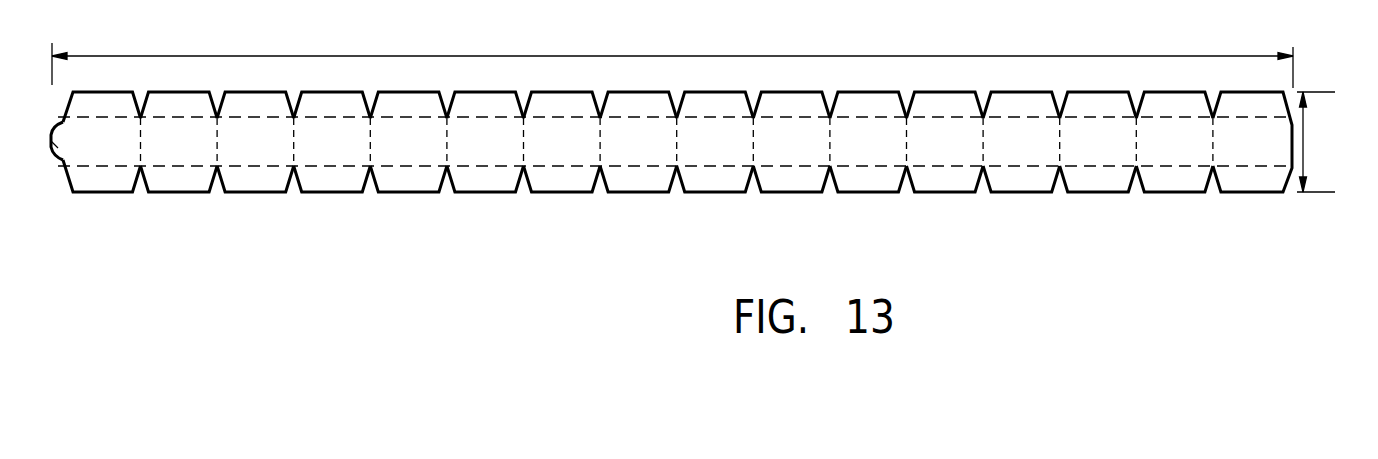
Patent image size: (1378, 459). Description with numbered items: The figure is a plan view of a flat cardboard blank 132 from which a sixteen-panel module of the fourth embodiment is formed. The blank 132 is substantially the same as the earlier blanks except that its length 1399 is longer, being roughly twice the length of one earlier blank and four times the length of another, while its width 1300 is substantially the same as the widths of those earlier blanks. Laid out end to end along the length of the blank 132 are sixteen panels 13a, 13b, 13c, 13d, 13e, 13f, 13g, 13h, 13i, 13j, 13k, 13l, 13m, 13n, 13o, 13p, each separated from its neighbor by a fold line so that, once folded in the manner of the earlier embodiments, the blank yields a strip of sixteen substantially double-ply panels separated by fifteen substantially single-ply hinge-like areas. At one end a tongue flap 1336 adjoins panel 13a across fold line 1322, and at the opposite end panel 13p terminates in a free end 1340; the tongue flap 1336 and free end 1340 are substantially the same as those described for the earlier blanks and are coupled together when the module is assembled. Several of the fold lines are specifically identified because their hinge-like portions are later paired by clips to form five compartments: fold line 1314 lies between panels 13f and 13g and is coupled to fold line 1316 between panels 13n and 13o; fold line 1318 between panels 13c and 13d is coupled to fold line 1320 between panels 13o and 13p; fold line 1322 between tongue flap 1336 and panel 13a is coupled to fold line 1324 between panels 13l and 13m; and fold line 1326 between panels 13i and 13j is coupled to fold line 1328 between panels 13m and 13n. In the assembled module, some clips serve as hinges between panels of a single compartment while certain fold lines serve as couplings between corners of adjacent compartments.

The 16-panel flat blank 132 is at (643, 216).
The length 1399 is at (672, 55).
The width 1300 is at (1330, 142).
The panel 13a is at (123, 158).
The panel 13b is at (199, 158).
The panel 13c is at (276, 158).
The panel 13d is at (351, 158).
The panel 13e is at (421, 158).
The panel 13f is at (495, 158).
The panel 13g is at (575, 158).
The panel 13h is at (651, 158).
The panel 13i is at (724, 158).
The panel 13j is at (766, 158).
The panel 13k is at (881, 158).
The panel 13l is at (949, 158).
The panel 13m is at (1045, 158).
The panel 13n is at (1116, 158).
The panel 13o is at (1155, 158).
The panel 13p is at (1232, 158).
The tongue flap 1336 is at (55, 150).
The fold line 1322 is at (58, 148).
The fold line 1318 is at (293, 142).
The fold line 1314 is at (522, 138).
The fold line 1326 is at (750, 138).
The fold line 1324 is at (980, 142).
The fold line 1328 is at (1058, 142).
The fold line 1316 is at (1137, 142).
The fold line 1320 is at (1213, 142).
The free end 1340 is at (1290, 145).